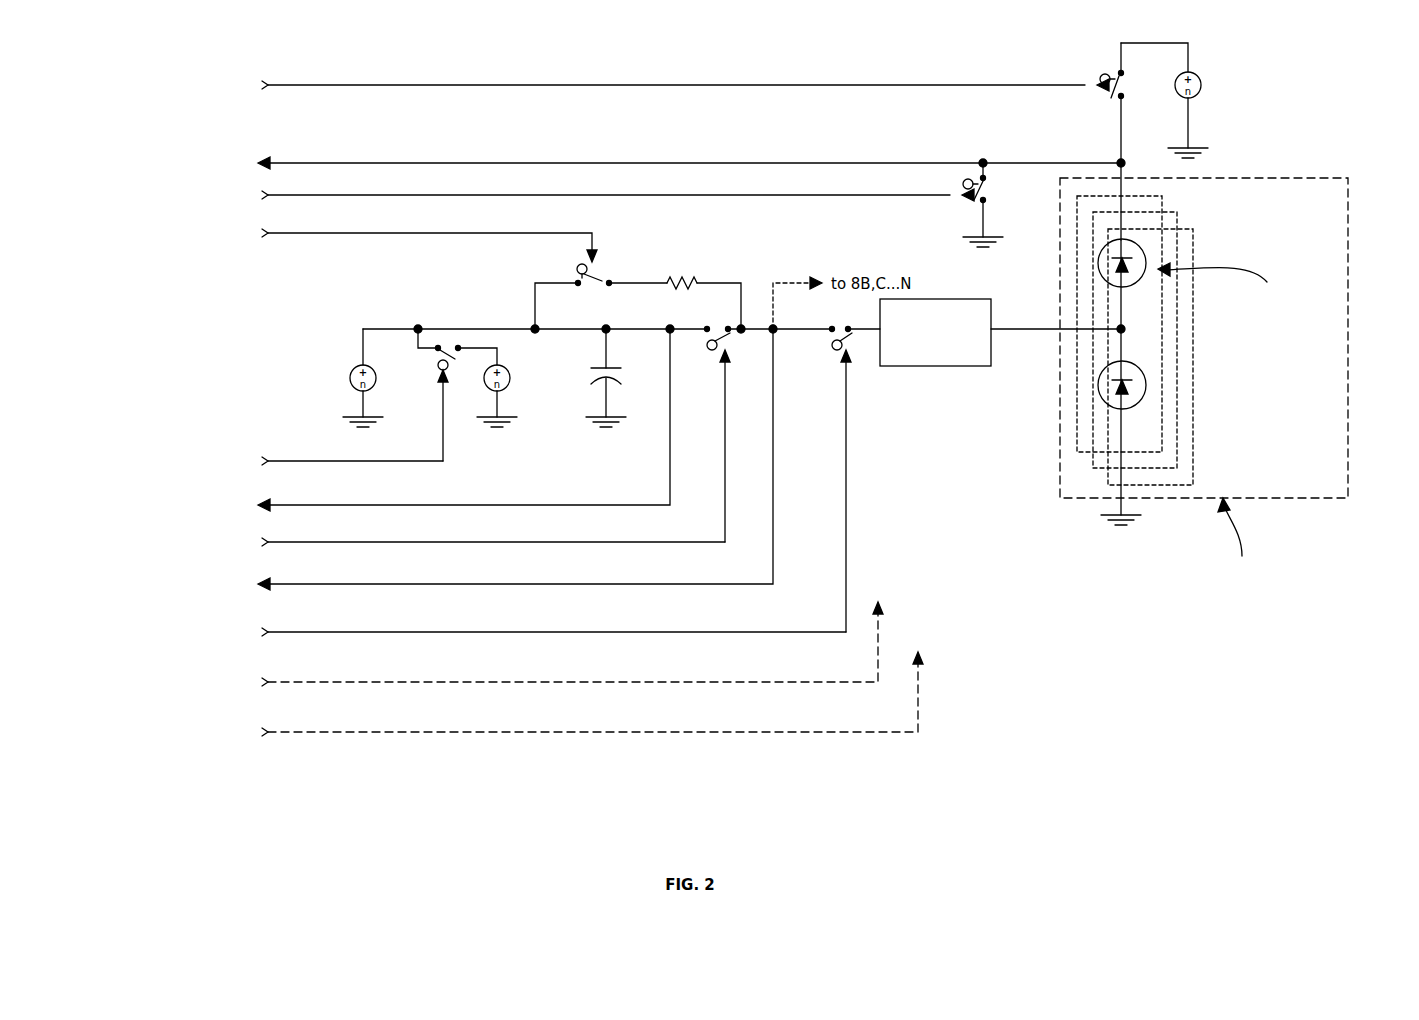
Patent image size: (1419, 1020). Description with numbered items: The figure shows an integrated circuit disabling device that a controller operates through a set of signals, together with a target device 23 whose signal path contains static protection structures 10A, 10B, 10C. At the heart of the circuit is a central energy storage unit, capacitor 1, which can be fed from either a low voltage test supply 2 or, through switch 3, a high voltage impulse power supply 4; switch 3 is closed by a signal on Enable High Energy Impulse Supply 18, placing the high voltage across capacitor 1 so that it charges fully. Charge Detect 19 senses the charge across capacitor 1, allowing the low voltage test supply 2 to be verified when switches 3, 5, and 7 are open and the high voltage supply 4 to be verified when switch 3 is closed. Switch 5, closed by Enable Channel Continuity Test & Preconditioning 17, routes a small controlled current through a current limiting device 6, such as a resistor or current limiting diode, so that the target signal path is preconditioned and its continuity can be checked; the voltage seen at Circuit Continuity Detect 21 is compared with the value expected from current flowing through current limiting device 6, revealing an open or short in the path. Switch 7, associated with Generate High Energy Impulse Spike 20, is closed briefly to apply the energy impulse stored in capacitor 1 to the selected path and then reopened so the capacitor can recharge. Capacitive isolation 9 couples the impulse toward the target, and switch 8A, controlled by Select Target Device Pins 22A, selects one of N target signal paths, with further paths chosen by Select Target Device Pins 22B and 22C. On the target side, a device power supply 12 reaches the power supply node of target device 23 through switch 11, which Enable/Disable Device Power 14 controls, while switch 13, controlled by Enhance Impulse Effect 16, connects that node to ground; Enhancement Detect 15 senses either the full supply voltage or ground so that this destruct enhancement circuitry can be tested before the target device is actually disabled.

The capacitor 1 is at (630, 376).
The low voltage test supply 2 is at (372, 388).
The switch 3 is at (433, 360).
The high voltage impulse power supply 4 is at (483, 383).
The switch 5 is at (603, 269).
The current limiting device 6 is at (691, 290).
The switch 7 is at (713, 352).
The switch 8A is at (832, 352).
The capacitive isolation 9 is at (995, 368).
The static protection structure 10A is at (1165, 370).
The static protection structure 10B is at (1178, 422).
The static protection structure 10C is at (1192, 457).
The switch 11 is at (1097, 75).
The device power supply 12 is at (1173, 74).
The switch 13 is at (993, 186).
The Enable/Disable Device Power 14 is at (283, 87).
The Enhancement Detect 15 is at (288, 165).
The Enhance Impulse Effect 16 is at (290, 197).
The Enable Channel Continuity Test & Preconditioning 17 is at (290, 235).
The Enable High Energy Impulse Supply 18 is at (280, 463).
The Charge Detect 19 is at (283, 507).
The Generate High Energy Impulse Spike 20 is at (283, 544).
The Circuit Continuity Detect 21 is at (285, 586).
The Select Target Device Pins 22A is at (283, 634).
The Select Target Device Pins 22B is at (283, 684).
The Select Target Device Pins 22C is at (283, 734).
The target device 23 is at (1350, 455).